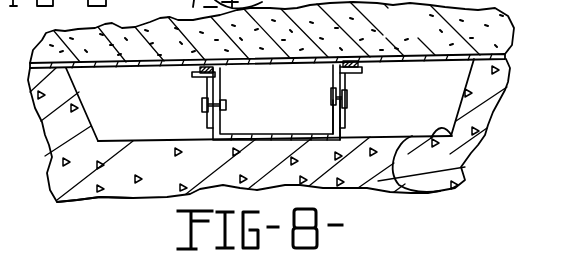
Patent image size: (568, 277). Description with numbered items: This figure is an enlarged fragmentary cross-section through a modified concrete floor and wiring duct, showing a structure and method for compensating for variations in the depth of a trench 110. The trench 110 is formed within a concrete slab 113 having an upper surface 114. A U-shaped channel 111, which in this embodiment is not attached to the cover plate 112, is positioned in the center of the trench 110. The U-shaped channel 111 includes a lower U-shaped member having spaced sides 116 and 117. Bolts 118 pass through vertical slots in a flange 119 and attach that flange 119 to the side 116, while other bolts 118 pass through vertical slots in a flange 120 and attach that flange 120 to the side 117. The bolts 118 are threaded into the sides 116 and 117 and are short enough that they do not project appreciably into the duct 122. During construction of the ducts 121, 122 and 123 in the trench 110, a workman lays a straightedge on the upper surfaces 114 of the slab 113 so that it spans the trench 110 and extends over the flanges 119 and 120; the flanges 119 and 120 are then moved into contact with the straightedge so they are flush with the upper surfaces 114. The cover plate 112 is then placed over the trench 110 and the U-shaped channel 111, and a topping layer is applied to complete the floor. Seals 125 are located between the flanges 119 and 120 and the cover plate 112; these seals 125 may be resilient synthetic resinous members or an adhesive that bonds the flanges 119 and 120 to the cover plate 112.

The trench 110 is at (474, 149).
The U-shaped channel 111 is at (274, 100).
The cover plate 112 is at (421, 29).
The concrete slab 113 is at (72, 203).
The upper surface 114 is at (41, 65).
The side 116 is at (226, 126).
The side 117 is at (338, 116).
The bolts 118 is at (204, 109).
The flange 119 is at (210, 89).
The flange 120 is at (338, 79).
The duct 121 is at (170, 142).
The duct 122 is at (264, 99).
The duct 123 is at (421, 160).
The seals 125 is at (196, 72).